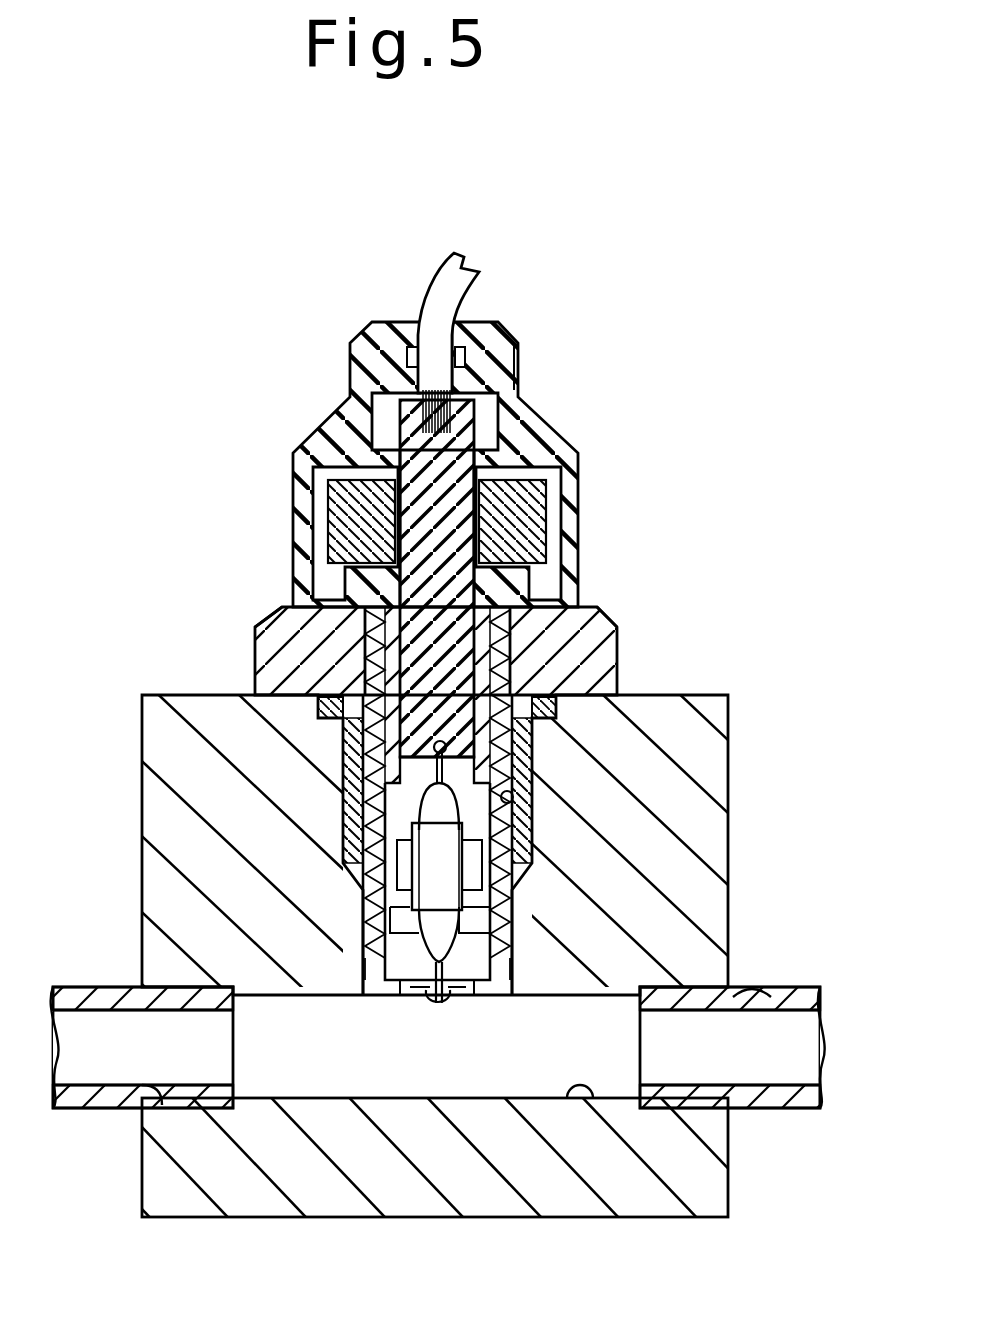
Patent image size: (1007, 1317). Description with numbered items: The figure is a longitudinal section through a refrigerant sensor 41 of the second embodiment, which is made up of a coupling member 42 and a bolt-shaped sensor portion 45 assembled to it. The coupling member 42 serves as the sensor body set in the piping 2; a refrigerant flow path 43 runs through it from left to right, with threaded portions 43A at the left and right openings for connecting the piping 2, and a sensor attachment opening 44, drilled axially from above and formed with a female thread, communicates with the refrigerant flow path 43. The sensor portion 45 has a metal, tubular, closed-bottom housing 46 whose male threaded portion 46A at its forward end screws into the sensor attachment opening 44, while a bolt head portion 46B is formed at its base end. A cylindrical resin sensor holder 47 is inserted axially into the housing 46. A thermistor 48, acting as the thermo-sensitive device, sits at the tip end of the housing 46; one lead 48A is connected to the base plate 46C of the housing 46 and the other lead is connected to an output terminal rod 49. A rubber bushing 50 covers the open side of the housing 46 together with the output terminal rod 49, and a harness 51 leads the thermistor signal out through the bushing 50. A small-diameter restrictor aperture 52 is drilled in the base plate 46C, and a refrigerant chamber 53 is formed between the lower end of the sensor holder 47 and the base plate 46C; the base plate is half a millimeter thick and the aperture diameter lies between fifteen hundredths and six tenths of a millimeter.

The piping 2 is at (78, 1098).
The refrigerant sensor 41 is at (431, 757).
The coupling member 42 is at (703, 733).
The refrigerant flow path 43 is at (590, 1100).
The threaded portions 43A is at (160, 1095).
The sensor attachment opening 44 is at (533, 783).
The sensor portion 45 is at (326, 402).
The housing 46 is at (268, 650).
The male threaded portion 46A is at (355, 795).
The bolt head portion 46B is at (626, 634).
The base plate 46C is at (480, 997).
The sensor holder 47 is at (500, 690).
The thermistor 48 is at (457, 935).
The lead 48A is at (446, 754).
The output terminal rod 49 is at (425, 540).
The rubber bushing 50 is at (530, 428).
The harness 51 is at (447, 290).
The restrictor aperture 52 is at (410, 997).
The refrigerant chamber 53 is at (385, 962).